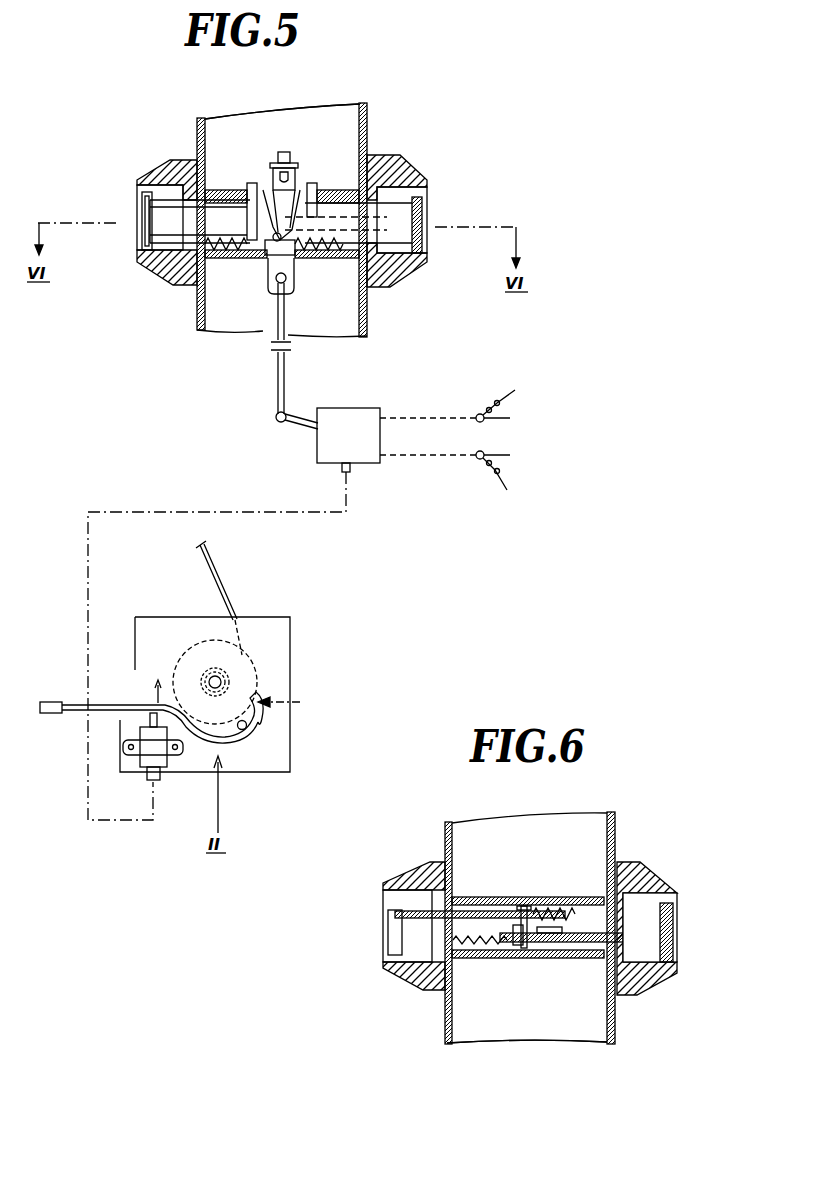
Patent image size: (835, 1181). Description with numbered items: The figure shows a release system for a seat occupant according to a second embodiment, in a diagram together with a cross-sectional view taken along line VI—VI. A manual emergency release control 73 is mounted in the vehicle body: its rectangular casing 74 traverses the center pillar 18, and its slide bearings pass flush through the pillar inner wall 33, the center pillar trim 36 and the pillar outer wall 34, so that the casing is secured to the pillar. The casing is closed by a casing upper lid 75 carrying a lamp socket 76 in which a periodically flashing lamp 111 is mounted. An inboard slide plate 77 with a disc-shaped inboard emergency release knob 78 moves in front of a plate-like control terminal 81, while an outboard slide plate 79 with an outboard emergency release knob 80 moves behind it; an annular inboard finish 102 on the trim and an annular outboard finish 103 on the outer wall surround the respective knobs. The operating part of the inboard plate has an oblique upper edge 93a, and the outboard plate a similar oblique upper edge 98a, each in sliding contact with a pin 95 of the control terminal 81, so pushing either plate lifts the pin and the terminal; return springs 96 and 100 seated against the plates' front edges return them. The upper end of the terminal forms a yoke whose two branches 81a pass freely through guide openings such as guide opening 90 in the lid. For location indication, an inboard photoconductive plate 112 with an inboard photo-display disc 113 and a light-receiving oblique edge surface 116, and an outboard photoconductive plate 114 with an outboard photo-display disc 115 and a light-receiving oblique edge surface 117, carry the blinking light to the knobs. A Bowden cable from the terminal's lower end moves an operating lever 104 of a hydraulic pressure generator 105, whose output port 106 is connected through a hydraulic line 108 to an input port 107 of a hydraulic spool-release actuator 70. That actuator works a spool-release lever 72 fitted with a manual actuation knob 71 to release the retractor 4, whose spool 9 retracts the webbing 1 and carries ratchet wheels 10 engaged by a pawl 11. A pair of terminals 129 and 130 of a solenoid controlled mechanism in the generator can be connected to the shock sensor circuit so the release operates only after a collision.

In FIG. 5, the webbing 1 is at (217, 570).
In FIG. 5, the retractor 4 is at (276, 615).
In FIG. 5, the spool 9 is at (181, 632).
In FIG. 5, the ratchet wheels 10 is at (255, 657).
In FIG. 5, the pawl 11 is at (293, 706).
In FIG. 5, the center pillar 18 is at (218, 323).
In FIG. 6, the center pillar 18 is at (563, 812).
In FIG. 5, the pillar inner wall 33 is at (365, 323).
In FIG. 6, the pillar inner wall 33 is at (603, 1043).
In FIG. 5, the pillar outer wall 34 is at (197, 310).
In FIG. 6, the pillar outer wall 34 is at (445, 1020).
In FIG. 5, the center pillar trim 36 is at (368, 305).
In FIG. 6, the center pillar trim 36 is at (615, 842).
In FIG. 5, the hydraulic spool-release actuator 70 is at (163, 773).
In FIG. 5, the manual actuation knob 71 is at (47, 702).
In FIG. 5, the spool-release lever 72 is at (242, 740).
In FIG. 5, the manual emergency release control 73 is at (352, 120).
In FIG. 6, the manual emergency release control 73 is at (497, 836).
In FIG. 5, the casing 74 is at (340, 260).
In FIG. 6, the casing 74 is at (587, 953).
In FIG. 5, the casing upper lid 75 is at (199, 135).
In FIG. 5, the lamp socket 76 is at (270, 165).
In FIG. 5, the inboard slide plate 77 is at (398, 247).
In FIG. 6, the inboard slide plate 77 is at (622, 987).
In FIG. 5, the inboard emergency release knob 78 is at (417, 245).
In FIG. 6, the inboard emergency release knob 78 is at (665, 905).
In FIG. 5, the outboard slide plate 79 is at (173, 233).
In FIG. 6, the outboard slide plate 79 is at (468, 912).
In FIG. 5, the outboard emergency release knob 80 is at (148, 242).
In FIG. 6, the outboard emergency release knob 80 is at (390, 950).
In FIG. 5, the control terminal 81 is at (268, 313).
In FIG. 6, the control terminal 81 is at (547, 927).
In FIG. 5, the branches 81a is at (252, 188).
In FIG. 6, the branches 81a is at (545, 927).
In FIG. 5, the guide opening 90 is at (318, 195).
In FIG. 5, the oblique upper edge 93a is at (298, 185).
In FIG. 6, the oblique upper edge 93a is at (538, 950).
In FIG. 5, the pin 95 is at (280, 152).
In FIG. 6, the pin 95 is at (522, 906).
In FIG. 5, the return spring 96 is at (222, 252).
In FIG. 6, the return spring 96 is at (500, 907).
In FIG. 5, the oblique upper edge 98a is at (262, 186).
In FIG. 6, the oblique upper edge 98a is at (535, 912).
In FIG. 5, the return spring 100 is at (323, 248).
In FIG. 6, the return spring 100 is at (653, 980).
In FIG. 5, the inboard finish 102 is at (383, 168).
In FIG. 6, the inboard finish 102 is at (658, 880).
In FIG. 5, the outboard finish 103 is at (182, 156).
In FIG. 6, the outboard finish 103 is at (412, 853).
In FIG. 5, the operating lever 104 is at (290, 425).
In FIG. 5, the hydraulic pressure generator 105 is at (367, 460).
In FIG. 5, the output port 106 is at (342, 470).
In FIG. 5, the input port 107 is at (147, 780).
In FIG. 5, the hydraulic line 108 is at (118, 512).
In FIG. 5, the lamp 111 is at (283, 150).
In FIG. 5, the inboard photoconductive plate 112 is at (390, 217).
In FIG. 5, the inboard photo-display disc 113 is at (425, 208).
In FIG. 6, the inboard photo-display disc 113 is at (673, 955).
In FIG. 5, the outboard photoconductive plate 114 is at (162, 182).
In FIG. 6, the outboard photoconductive plate 114 is at (463, 950).
In FIG. 5, the outboard photo-display disc 115 is at (140, 197).
In FIG. 6, the outboard photo-display disc 115 is at (388, 923).
In FIG. 5, the light-receiving oblique edge surface 116 is at (290, 282).
In FIG. 6, the light-receiving oblique edge surface 116 is at (540, 943).
In FIG. 5, the light-receiving oblique edge surface 117 is at (252, 265).
In FIG. 6, the light-receiving oblique edge surface 117 is at (510, 957).
In FIG. 5, the terminal 129 is at (510, 410).
In FIG. 5, the terminal 130 is at (510, 468).